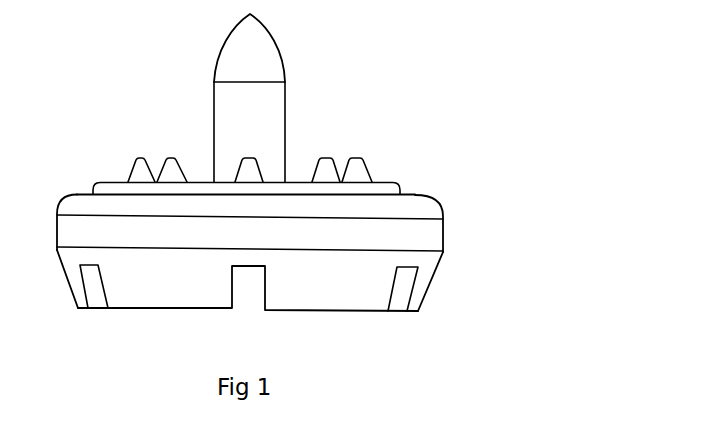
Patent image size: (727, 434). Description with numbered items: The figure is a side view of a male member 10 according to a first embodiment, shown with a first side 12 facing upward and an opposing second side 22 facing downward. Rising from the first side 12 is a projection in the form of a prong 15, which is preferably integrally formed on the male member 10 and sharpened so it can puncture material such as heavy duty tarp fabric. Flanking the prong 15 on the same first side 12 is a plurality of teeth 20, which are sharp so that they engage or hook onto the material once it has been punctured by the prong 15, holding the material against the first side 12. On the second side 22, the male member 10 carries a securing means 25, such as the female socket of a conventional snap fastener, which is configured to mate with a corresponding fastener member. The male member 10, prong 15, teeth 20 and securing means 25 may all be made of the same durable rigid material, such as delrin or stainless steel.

The male member 10 is at (507, 60).
The first side 12 is at (448, 179).
The prong 15 is at (281, 48).
The plurality of teeth 20 is at (362, 160).
The second side 22 is at (440, 339).
The securing means 25 is at (140, 312).